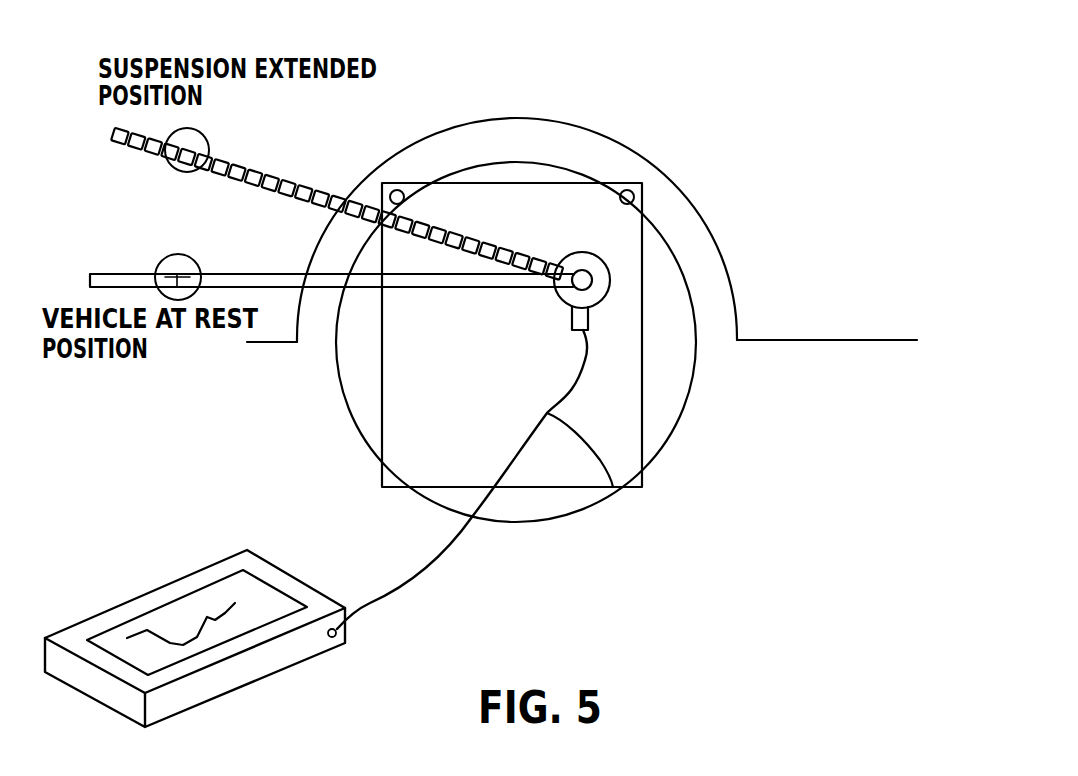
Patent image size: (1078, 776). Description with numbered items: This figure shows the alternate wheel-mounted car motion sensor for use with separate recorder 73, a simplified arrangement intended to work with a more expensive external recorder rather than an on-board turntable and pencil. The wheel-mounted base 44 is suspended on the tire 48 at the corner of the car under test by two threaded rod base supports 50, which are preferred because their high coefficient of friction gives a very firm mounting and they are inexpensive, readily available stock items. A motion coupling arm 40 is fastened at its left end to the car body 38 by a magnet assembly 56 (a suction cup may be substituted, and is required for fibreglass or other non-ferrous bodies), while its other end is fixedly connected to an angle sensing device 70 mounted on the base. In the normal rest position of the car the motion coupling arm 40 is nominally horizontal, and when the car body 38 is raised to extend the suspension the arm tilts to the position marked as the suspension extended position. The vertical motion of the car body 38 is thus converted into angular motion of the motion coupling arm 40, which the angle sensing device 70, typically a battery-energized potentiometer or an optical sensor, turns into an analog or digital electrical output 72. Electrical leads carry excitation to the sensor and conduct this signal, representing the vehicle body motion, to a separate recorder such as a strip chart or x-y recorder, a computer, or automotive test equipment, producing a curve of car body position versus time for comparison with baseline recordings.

The car body 38 is at (674, 61).
The motion coupling arm 40 is at (268, 168).
The wheel-mounted base 44 is at (430, 445).
The tire 48 is at (518, 522).
The threaded rod base supports 50 is at (634, 197).
The magnet assembly 56 is at (197, 171).
The angle sensing device 70 is at (608, 256).
The electrical output 72 is at (613, 487).
The alternate wheel-mounted car motion sensor for use with separate recorder 73 is at (223, 562).